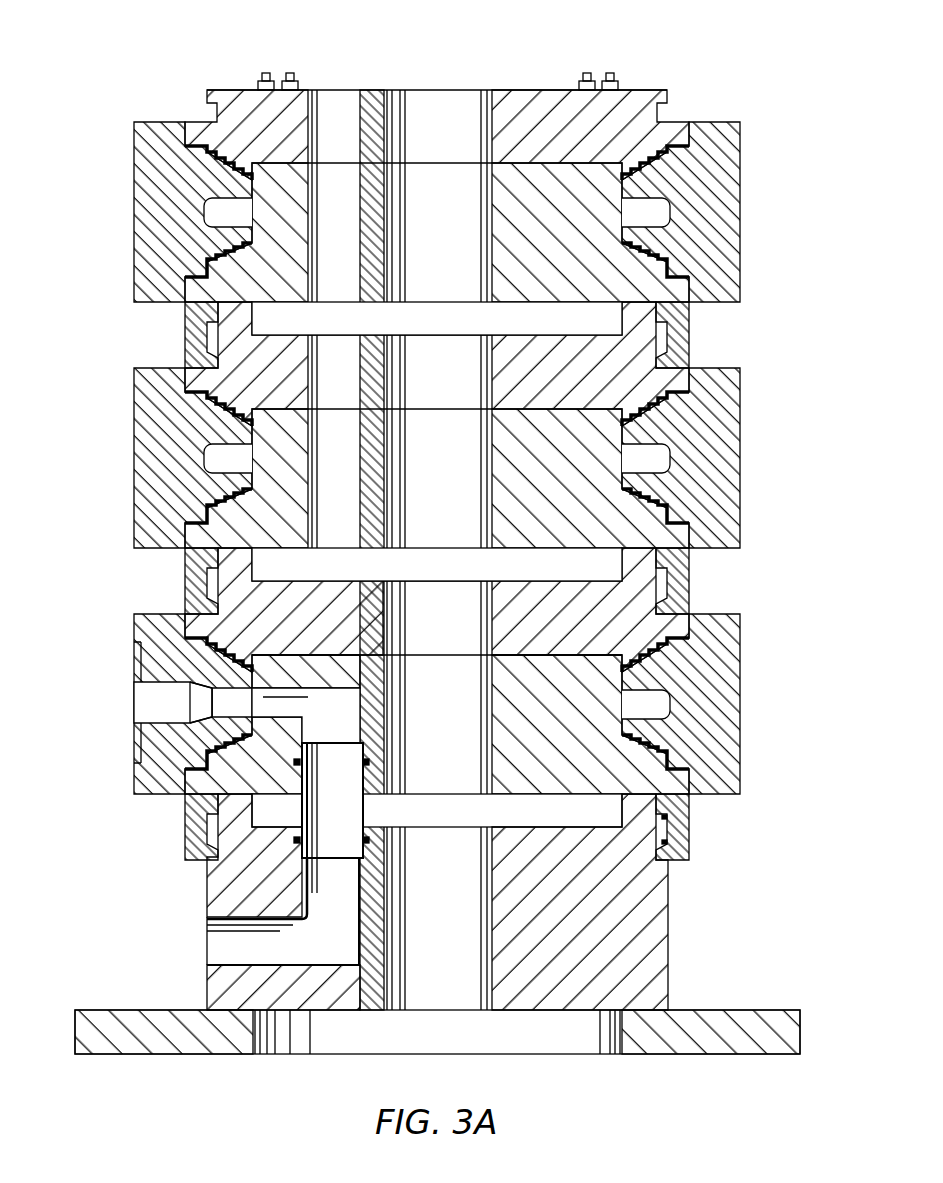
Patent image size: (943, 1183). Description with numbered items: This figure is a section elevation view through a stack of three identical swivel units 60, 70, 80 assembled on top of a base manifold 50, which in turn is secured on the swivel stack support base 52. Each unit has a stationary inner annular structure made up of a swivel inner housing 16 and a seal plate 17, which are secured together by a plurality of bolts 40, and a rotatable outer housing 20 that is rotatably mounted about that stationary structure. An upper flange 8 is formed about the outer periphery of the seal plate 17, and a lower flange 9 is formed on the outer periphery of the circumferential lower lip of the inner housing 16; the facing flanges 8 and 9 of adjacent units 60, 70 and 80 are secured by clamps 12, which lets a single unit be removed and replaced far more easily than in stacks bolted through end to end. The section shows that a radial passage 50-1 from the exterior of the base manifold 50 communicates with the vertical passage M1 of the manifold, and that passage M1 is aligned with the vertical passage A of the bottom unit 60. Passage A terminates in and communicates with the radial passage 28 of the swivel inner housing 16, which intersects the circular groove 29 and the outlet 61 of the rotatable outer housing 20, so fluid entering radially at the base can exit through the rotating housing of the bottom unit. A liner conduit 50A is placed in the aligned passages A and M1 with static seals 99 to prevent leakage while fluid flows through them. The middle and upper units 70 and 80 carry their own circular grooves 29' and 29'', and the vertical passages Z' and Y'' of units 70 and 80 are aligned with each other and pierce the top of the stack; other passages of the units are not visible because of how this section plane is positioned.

The bolts 40 is at (587, 72).
The swivel unit 80 is at (104, 145).
The swivel unit 70 is at (104, 391).
The swivel unit 60 is at (104, 635).
The base manifold 50 is at (104, 927).
The rotatable outer housing 20 is at (742, 264).
The seal plate 17 is at (685, 137).
The swivel inner housing 16 is at (652, 265).
The clamps 12 is at (690, 331).
The circular groove 29'' is at (370, 199).
The circular groove 29' is at (370, 445).
The circular groove 29 is at (433, 690).
The passage Y'' is at (387, 232).
The passage Z' is at (386, 478).
The outlet 61 is at (158, 708).
The radial passage 28 is at (233, 704).
The vertical passage A is at (273, 707).
The static seals 99 is at (372, 766).
The lower flange 9 is at (668, 817).
The upper flange 8 is at (668, 843).
The liner conduit 50A is at (290, 857).
The radial inlet 50-1 is at (225, 947).
The vertical passage M1 is at (330, 945).
The swivel stack support base 52 is at (735, 1010).